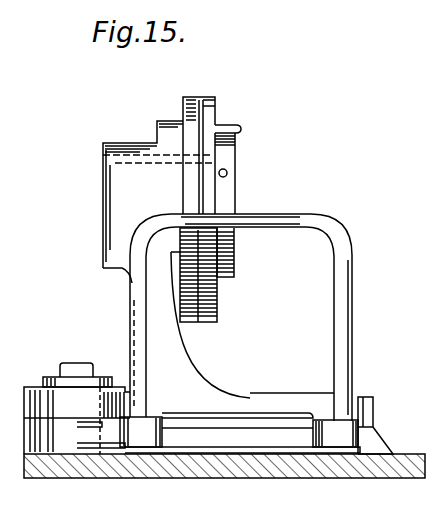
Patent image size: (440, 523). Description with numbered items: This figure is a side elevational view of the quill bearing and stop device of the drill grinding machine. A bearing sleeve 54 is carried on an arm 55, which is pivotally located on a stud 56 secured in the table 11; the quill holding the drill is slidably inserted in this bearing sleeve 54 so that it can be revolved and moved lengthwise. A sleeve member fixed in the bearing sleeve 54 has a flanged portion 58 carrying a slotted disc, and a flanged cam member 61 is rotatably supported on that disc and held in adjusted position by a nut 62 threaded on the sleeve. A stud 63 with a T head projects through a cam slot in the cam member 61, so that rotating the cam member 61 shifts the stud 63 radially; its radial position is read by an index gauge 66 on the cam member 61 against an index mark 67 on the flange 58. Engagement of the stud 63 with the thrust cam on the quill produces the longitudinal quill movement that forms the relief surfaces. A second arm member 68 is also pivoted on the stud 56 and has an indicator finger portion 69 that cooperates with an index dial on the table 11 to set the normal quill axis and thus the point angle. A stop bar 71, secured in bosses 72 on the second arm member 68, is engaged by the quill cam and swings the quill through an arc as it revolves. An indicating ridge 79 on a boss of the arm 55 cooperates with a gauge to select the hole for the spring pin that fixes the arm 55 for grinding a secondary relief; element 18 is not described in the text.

The table 11 is at (326, 468).
The base plate 18 is at (306, 516).
The bearing sleeve 54 is at (116, 170).
The arm 55 is at (248, 399).
The stud 56 is at (60, 372).
The flanged portion 58 is at (184, 112).
The cam member 61 is at (210, 109).
The nut 62 is at (225, 186).
The stud 63 is at (240, 130).
The index gauge 66 is at (207, 99).
The index mark 67 is at (193, 96).
The second arm member 68 is at (240, 436).
The indicator finger portion 69 is at (373, 440).
The stop bar 71 is at (292, 226).
The bosses 72 is at (152, 416).
The indicating ridge 79 is at (373, 401).